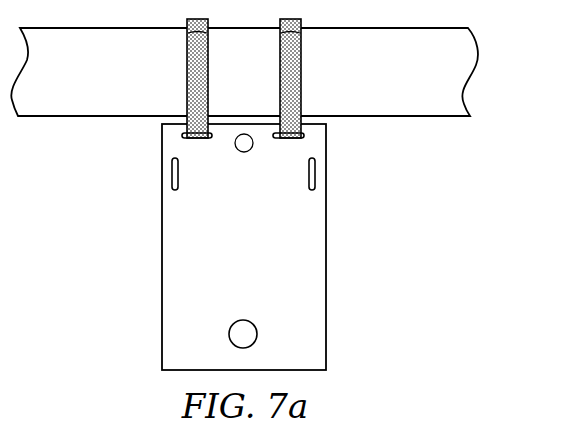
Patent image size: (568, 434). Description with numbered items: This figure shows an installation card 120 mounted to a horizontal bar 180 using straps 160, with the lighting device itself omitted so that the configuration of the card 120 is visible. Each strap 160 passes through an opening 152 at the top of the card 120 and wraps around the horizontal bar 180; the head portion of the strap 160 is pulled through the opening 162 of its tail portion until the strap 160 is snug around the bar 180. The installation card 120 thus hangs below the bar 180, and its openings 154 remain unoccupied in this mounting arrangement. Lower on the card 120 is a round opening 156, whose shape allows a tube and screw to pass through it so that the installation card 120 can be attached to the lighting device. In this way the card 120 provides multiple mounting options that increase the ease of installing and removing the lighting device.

The bar 180 is at (463, 50).
The installation card 120 is at (327, 257).
The strap 160 is at (192, 78).
The opening 152 is at (183, 136).
The opening of tail portion 162 is at (287, 139).
The openings 154 is at (174, 175).
The opening 156 is at (229, 333).